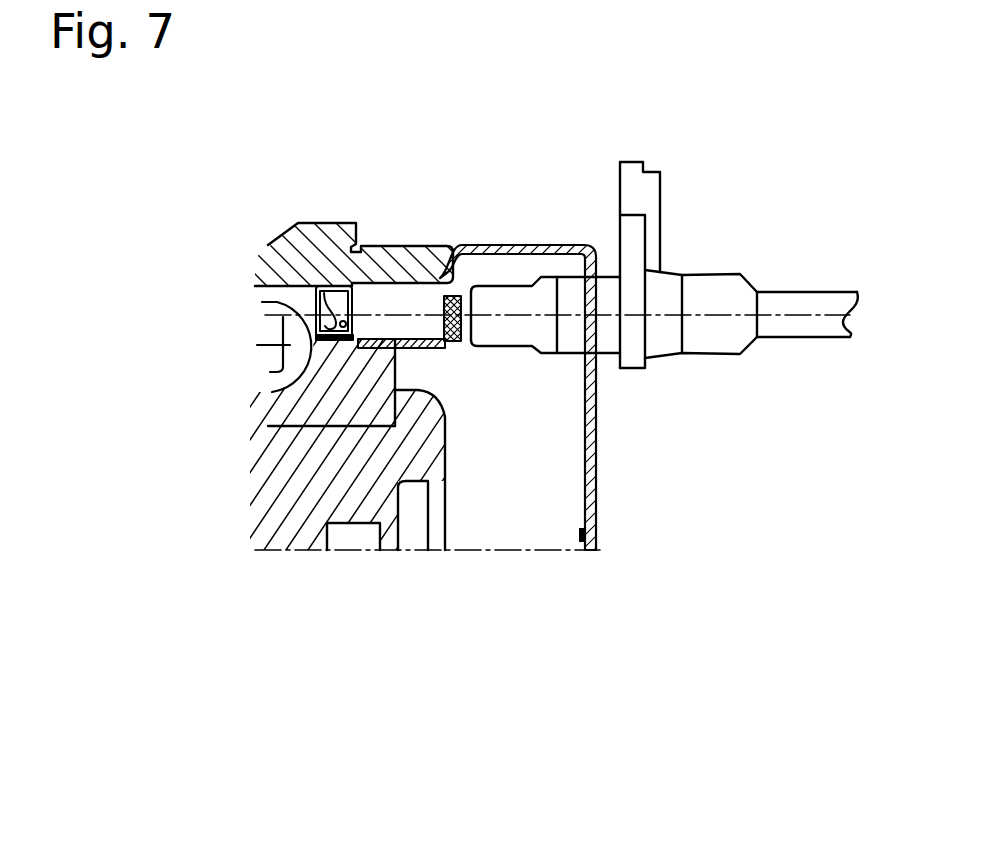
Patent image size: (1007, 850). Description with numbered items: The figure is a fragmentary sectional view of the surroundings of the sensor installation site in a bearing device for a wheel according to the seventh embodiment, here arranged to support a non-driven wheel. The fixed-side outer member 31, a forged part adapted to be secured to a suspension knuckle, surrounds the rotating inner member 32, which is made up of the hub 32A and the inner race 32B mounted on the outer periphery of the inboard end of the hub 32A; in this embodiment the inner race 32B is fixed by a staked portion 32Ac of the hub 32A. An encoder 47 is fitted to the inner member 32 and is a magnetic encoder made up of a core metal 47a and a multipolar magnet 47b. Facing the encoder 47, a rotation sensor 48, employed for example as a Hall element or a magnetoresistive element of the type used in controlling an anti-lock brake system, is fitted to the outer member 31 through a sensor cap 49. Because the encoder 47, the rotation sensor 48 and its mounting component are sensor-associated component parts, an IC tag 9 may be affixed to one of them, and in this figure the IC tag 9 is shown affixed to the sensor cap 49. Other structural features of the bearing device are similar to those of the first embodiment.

The IC tag 9 is at (576, 547).
The outer member 31 is at (320, 222).
The inner member 32 is at (90, 497).
The hub 32A is at (339, 494).
The inner race 32B is at (298, 402).
The staked portion 32Ac is at (424, 447).
The encoder 47 is at (474, 496).
The core metal 47a is at (412, 343).
The multipolar magnet 47b is at (468, 347).
The rotation sensor 48 is at (511, 302).
The sensor cap 49 is at (598, 448).